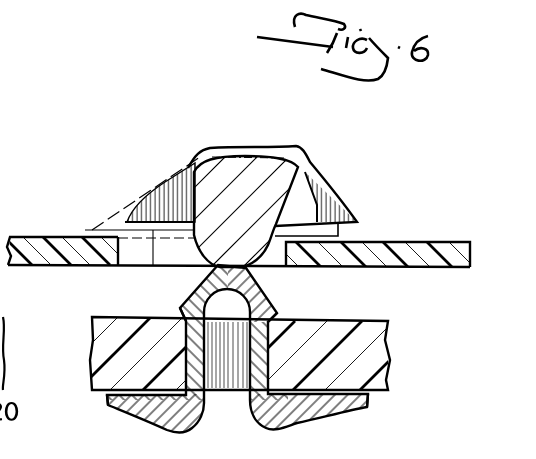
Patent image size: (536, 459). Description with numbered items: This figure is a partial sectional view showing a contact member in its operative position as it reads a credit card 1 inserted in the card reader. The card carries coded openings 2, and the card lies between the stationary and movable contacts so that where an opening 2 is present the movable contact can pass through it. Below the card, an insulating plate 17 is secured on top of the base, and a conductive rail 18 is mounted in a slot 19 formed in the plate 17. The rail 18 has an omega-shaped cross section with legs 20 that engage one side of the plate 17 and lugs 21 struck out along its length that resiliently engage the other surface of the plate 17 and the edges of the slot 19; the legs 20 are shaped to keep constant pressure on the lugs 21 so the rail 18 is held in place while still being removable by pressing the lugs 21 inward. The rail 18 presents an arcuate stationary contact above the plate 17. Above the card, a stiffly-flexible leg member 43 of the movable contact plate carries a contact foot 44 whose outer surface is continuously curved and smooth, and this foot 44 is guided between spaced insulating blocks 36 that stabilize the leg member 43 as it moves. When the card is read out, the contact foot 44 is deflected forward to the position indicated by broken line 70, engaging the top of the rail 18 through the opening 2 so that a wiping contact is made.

The credit card 1 is at (239, 235).
The openings 2 is at (136, 265).
The broken line 70 is at (138, 263).
The contact foot 44 is at (221, 172).
The insulating block 36 is at (338, 204).
The leg member 43 is at (268, 194).
The insulating plate 17 is at (239, 349).
The conductive rail 18 is at (235, 352).
The slot 19 is at (239, 387).
The leg 20 is at (230, 415).
The lug 21 is at (242, 309).